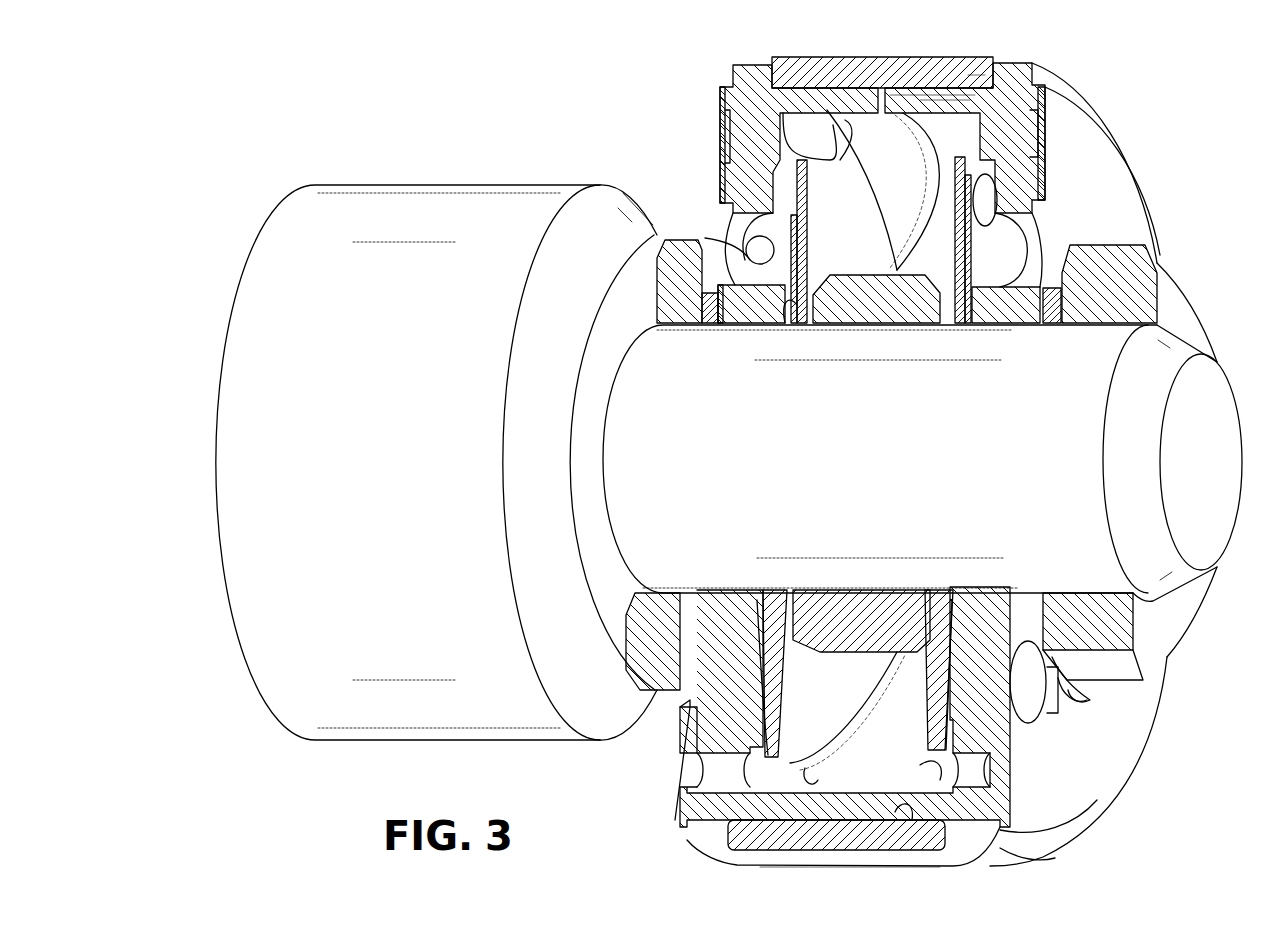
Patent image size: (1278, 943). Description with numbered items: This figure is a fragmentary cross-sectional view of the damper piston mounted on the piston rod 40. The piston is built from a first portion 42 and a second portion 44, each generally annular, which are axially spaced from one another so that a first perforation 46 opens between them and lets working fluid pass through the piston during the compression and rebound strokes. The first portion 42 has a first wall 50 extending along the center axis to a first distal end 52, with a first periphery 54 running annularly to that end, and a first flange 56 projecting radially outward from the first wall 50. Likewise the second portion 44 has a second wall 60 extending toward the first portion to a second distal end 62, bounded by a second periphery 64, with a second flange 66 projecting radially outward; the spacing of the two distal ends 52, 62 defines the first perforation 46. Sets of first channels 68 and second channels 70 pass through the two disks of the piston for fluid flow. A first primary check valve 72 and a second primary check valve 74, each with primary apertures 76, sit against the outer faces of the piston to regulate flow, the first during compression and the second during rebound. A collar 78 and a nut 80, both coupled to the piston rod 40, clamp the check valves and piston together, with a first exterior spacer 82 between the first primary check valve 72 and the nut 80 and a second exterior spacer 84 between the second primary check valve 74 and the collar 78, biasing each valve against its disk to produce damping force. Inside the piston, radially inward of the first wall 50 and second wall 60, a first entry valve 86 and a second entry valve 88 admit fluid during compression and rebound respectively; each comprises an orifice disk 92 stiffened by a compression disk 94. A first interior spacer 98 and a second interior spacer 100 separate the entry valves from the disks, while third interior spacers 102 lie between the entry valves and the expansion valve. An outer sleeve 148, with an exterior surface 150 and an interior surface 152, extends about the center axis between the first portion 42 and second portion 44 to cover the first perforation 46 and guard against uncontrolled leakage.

The piston rod 40 is at (348, 195).
The first portion 42 is at (1032, 68).
The second portion 44 is at (758, 62).
The first perforation 46 is at (775, 782).
The first wall 50 is at (948, 95).
The first distal end 52 is at (915, 110).
The first periphery 54 is at (975, 72).
The first flange 56 is at (1007, 82).
The second wall 60 is at (827, 100).
The second distal end 62 is at (862, 100).
The second periphery 64 is at (833, 95).
The second flange 66 is at (748, 75).
The first channels 68 is at (1018, 138).
The second channels 70 is at (795, 100).
The first primary check valve 72 is at (1060, 803).
The second primary check valve 74 is at (720, 137).
The primary apertures 76 is at (1082, 697).
The collar 78 is at (665, 248).
The nut 80 is at (1190, 315).
The first exterior spacer 82 is at (1050, 335).
The second exterior spacer 84 is at (710, 330).
The first entry valve 86 is at (927, 782).
The second entry valve 88 is at (703, 825).
The orifice disk 92 is at (770, 590).
The compression disk 94 is at (790, 590).
The first interior spacer 98 is at (985, 330).
The second interior spacer 100 is at (778, 325).
The third interior spacers 102 is at (822, 330).
The outer sleeve 148 is at (873, 835).
The exterior surface 150 is at (830, 860).
The interior surface 152 is at (905, 815).